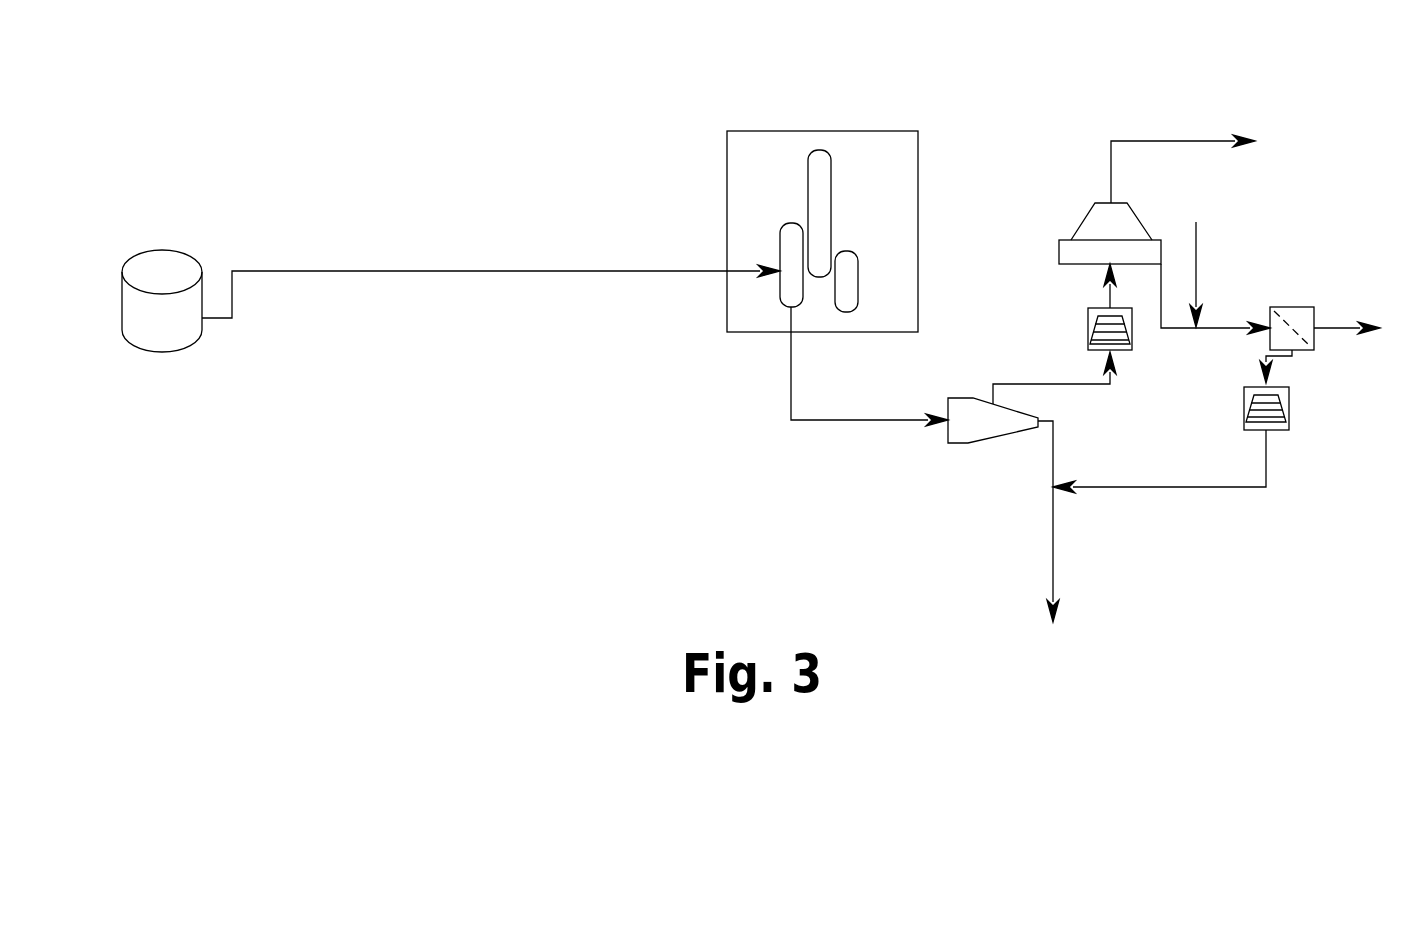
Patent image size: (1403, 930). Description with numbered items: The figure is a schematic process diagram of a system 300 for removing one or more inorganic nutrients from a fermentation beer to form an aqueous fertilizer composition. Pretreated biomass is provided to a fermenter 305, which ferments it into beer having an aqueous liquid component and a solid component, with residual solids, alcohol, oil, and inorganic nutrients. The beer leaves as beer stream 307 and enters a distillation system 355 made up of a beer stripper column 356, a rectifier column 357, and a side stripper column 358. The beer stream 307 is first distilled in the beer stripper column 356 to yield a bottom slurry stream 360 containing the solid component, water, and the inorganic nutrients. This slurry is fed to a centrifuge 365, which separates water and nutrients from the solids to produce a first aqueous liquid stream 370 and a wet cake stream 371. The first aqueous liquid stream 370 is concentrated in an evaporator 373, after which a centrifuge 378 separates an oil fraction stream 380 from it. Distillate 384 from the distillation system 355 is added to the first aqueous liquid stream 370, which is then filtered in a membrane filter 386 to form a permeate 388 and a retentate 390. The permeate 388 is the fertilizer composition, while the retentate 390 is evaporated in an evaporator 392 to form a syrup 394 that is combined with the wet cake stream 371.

The system 300 is at (528, 96).
The fermenter 305 is at (201, 263).
The beer stream 307 is at (500, 271).
The distillation system 355 is at (918, 167).
The beer stripper column 356 is at (783, 223).
The rectifier column 357 is at (831, 178).
The side stripper column 358 is at (858, 251).
The bottom slurry stream 360 is at (823, 421).
The centrifuge 365 is at (968, 444).
The first aqueous liquid stream 370 is at (1161, 270).
The wet cake stream 371 is at (1053, 459).
The evaporator 373 is at (1088, 316).
The centrifuge 378 is at (1070, 252).
The oil fraction stream 380 is at (1178, 141).
The distillate 384 is at (1196, 245).
The membrane filter 386 is at (1297, 307).
The permeate 388 is at (1340, 330).
The retentate 390 is at (1294, 356).
The evaporator 392 is at (1289, 411).
The syrup 394 is at (1168, 487).